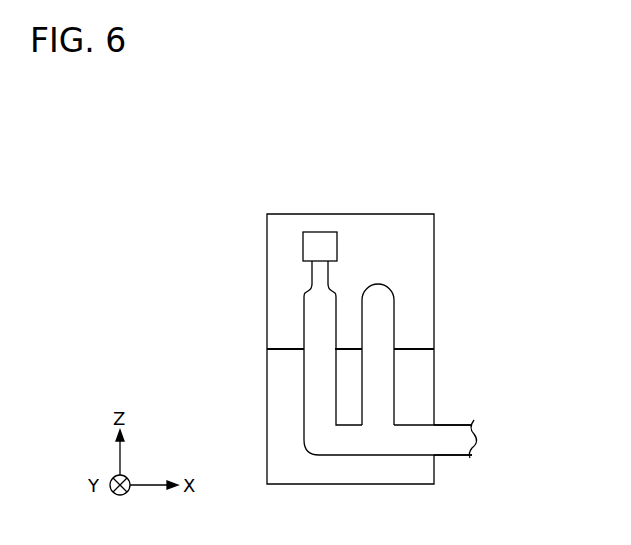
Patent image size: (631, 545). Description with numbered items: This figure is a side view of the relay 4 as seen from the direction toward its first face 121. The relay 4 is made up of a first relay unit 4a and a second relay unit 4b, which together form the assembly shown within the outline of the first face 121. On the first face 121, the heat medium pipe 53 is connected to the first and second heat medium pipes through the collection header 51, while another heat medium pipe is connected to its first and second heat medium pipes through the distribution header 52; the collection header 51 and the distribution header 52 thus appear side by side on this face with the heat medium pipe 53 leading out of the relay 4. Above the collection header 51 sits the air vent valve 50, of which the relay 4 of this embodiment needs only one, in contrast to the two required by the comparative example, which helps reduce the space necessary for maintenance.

The first face 121 is at (413, 238).
The relay 4 is at (197, 312).
The first relay unit 4a is at (267, 398).
The second relay unit 4b is at (267, 322).
The air vent valve 50 is at (303, 250).
The collection header 51 is at (312, 310).
The distribution header 52 is at (388, 324).
The heat medium pipe 53 is at (461, 457).